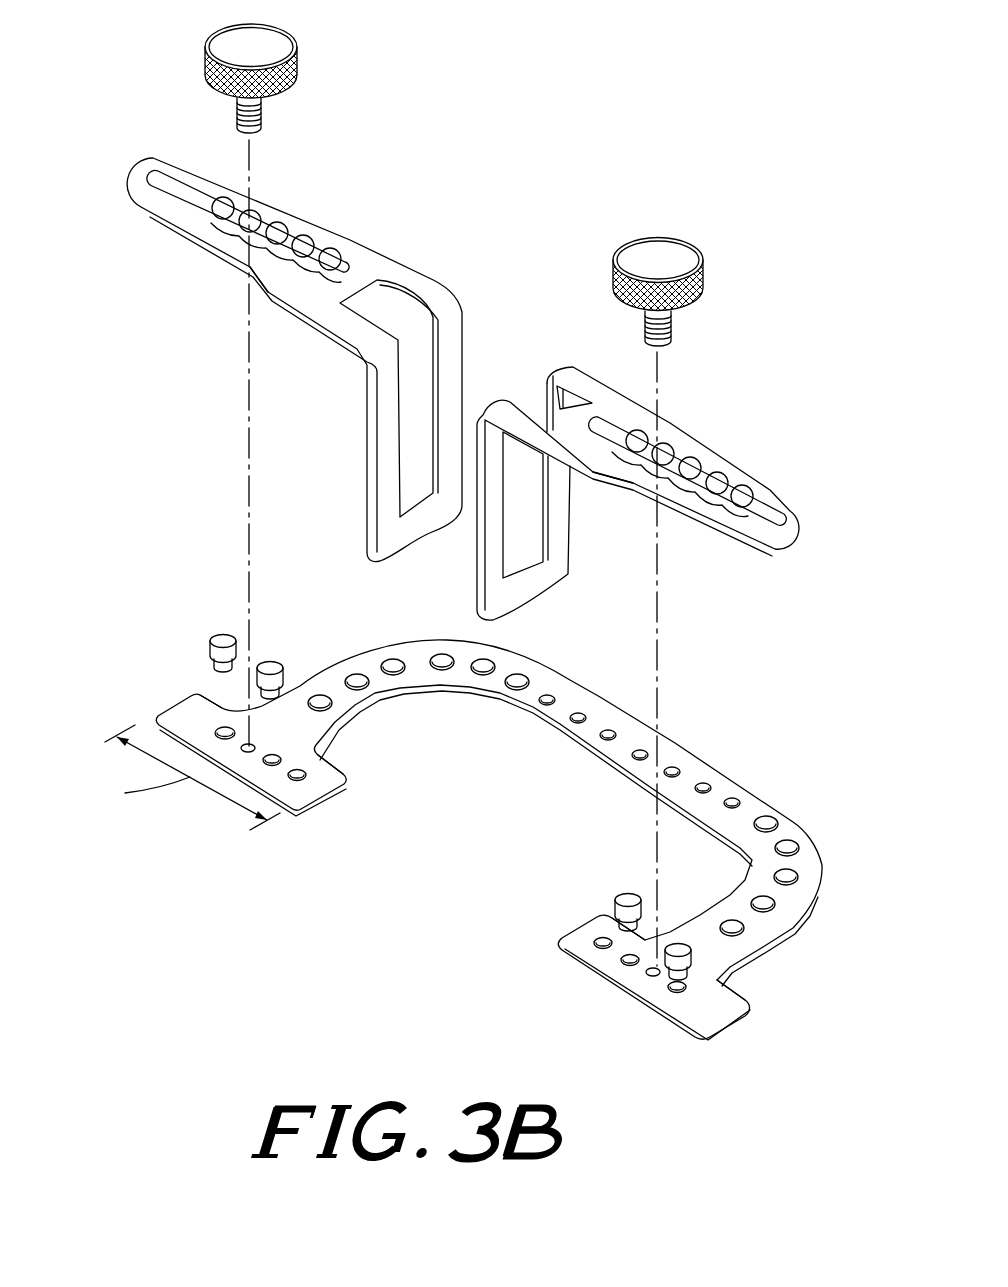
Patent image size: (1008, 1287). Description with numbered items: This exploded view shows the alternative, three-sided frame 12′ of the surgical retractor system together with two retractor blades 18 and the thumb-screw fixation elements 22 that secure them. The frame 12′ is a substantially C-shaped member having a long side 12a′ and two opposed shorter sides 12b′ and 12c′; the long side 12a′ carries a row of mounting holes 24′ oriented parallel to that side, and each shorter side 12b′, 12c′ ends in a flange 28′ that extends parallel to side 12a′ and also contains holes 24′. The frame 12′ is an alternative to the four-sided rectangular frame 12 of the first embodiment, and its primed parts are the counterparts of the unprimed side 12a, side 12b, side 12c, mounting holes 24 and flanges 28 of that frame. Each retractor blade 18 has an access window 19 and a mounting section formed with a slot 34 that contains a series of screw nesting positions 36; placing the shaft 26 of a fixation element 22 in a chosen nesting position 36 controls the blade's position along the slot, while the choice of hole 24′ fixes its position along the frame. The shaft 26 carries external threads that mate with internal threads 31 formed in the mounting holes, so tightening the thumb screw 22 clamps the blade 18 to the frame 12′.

The fixation element 22 is at (270, 64).
The shaft 26 is at (672, 320).
The retractor blade 18 is at (135, 170).
The slot 34 is at (177, 190).
The screw nesting positions 36 is at (288, 245).
The internal threads 31 is at (213, 207).
The access window 19 is at (402, 322).
The frame 12′ is at (496, 824).
The long side 12a′ is at (658, 744).
The shorter side 12b′ is at (415, 649).
The shorter side 12c′ is at (812, 876).
The mounting holes 24′ is at (467, 845).
The flange 28′ is at (472, 877).
The frame 12 is at (818, 830).
The frame side arm 12a is at (667, 747).
The side 12b is at (370, 663).
The frame rear arc portion 12c is at (788, 905).
The mounting holes 24 is at (222, 731).
The mounting tab 28 is at (320, 753).